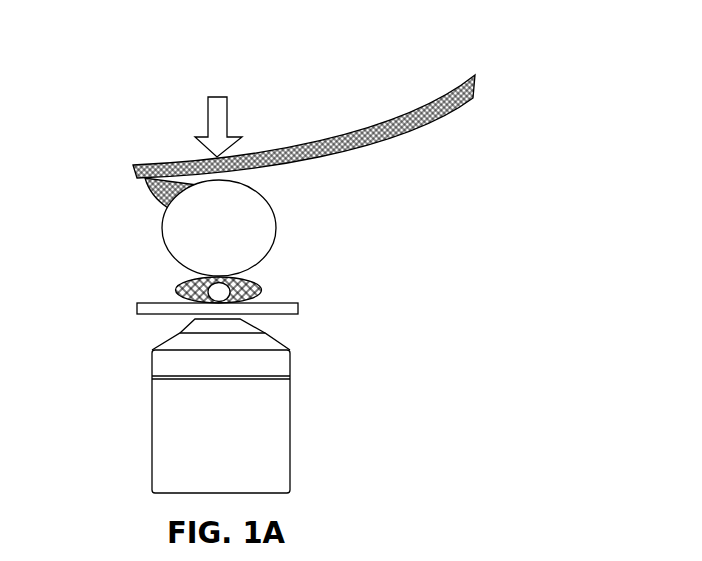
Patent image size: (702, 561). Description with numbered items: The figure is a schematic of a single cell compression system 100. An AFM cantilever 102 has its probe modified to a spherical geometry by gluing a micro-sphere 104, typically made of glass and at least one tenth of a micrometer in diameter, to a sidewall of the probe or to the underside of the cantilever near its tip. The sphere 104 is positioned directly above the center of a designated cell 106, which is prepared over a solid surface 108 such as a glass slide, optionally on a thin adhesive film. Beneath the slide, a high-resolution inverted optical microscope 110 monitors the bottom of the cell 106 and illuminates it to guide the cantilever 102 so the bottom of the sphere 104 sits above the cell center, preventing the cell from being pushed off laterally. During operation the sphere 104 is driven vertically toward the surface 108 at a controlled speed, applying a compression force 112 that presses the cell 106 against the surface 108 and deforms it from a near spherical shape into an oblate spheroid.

The single cell compression system 100 is at (448, 36).
The AFM cantilever 102 is at (440, 120).
The sphere 104 is at (219, 228).
The cell 106 is at (263, 288).
The surface 108 is at (268, 303).
The optical microscope 110 is at (221, 406).
The compression force 112 is at (266, 113).